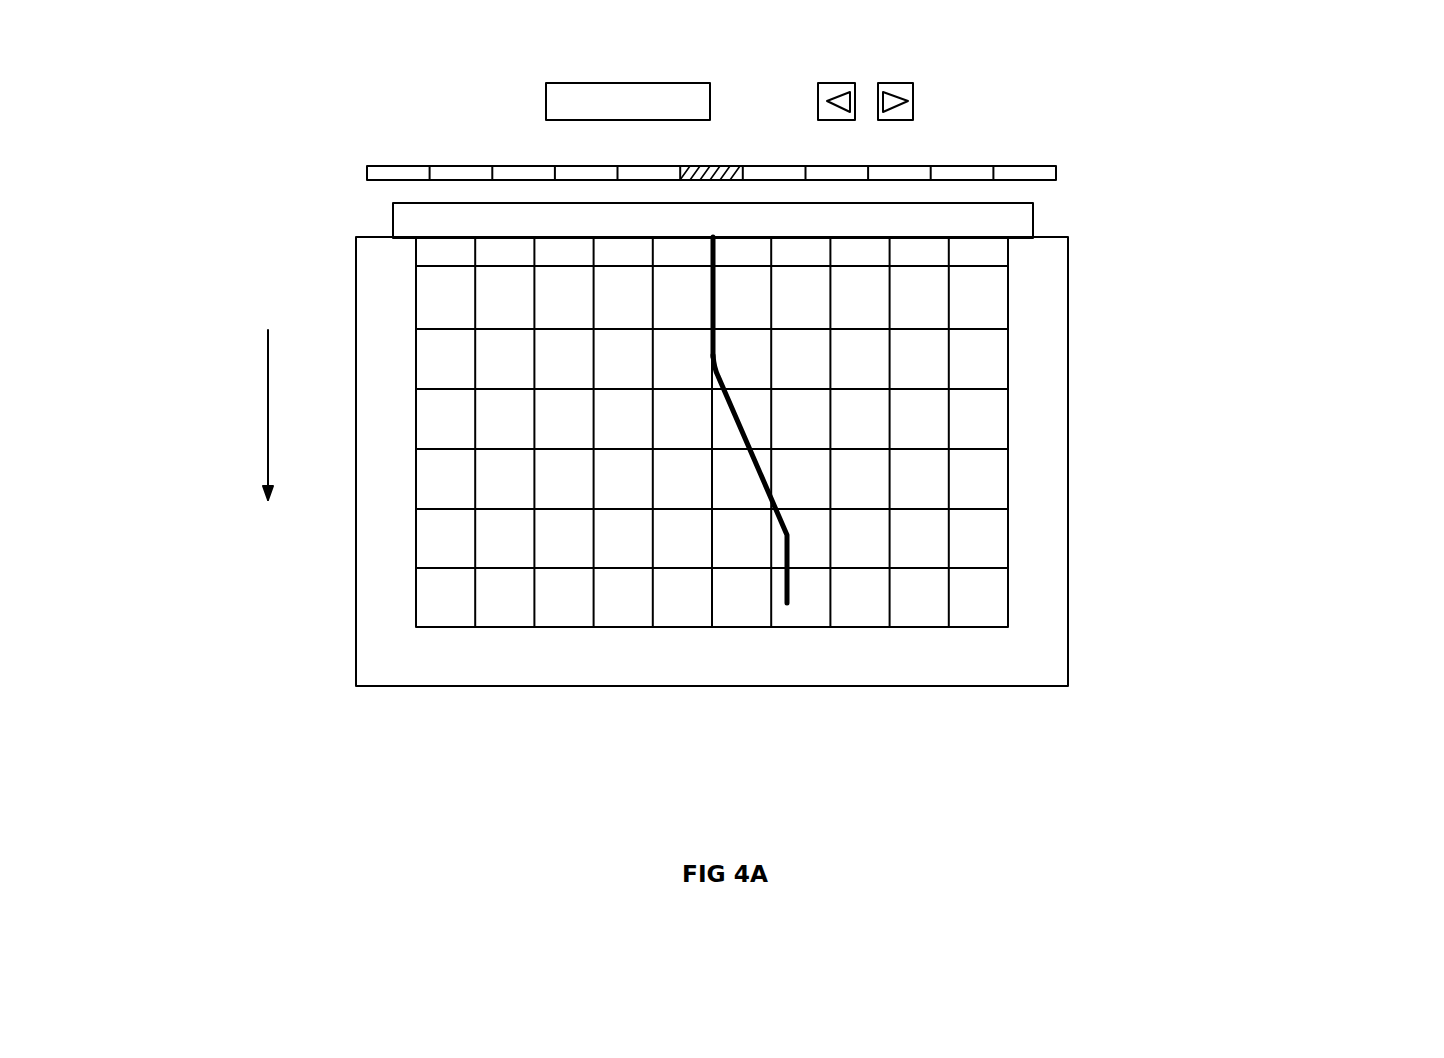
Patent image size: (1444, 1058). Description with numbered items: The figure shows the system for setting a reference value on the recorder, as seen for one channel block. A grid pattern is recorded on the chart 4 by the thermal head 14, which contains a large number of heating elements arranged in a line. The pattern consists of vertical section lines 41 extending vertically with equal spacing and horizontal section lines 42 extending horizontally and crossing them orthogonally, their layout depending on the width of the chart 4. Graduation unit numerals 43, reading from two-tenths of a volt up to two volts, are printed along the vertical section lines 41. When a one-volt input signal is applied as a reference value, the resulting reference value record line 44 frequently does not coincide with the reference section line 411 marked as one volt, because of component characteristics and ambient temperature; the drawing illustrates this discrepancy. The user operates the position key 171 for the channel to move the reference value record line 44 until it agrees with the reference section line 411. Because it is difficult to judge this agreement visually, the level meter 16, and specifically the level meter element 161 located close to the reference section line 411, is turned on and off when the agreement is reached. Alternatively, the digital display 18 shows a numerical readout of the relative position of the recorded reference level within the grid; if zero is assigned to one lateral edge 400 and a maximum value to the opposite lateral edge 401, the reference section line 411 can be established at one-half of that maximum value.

The digital display 18 is at (615, 83).
The position key 171 is at (855, 83).
The level meter 16 is at (1056, 173).
The level meter element 161 is at (710, 166).
The thermal head 14 is at (1033, 215).
The chart 4 is at (1068, 388).
The lateral edge of the grid pattern 400 is at (416, 300).
The opposite lateral edge of the grid pattern 401 is at (1008, 312).
The horizontal section lines 42 is at (971, 568).
The vertical section lines 41 is at (653, 602).
The graduation unit numerals 43 is at (528, 607).
The reference section line 411 is at (713, 550).
The reference value record line 44 is at (790, 583).